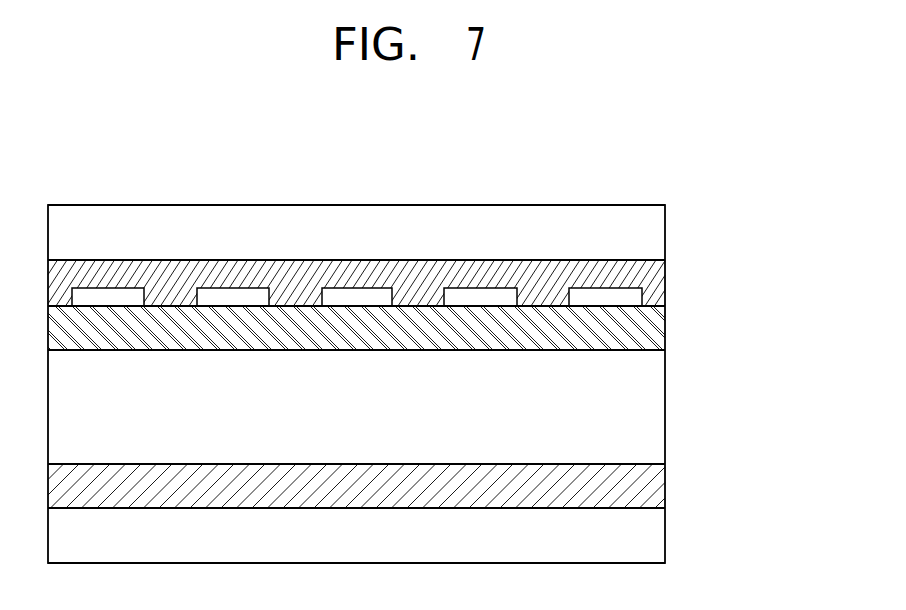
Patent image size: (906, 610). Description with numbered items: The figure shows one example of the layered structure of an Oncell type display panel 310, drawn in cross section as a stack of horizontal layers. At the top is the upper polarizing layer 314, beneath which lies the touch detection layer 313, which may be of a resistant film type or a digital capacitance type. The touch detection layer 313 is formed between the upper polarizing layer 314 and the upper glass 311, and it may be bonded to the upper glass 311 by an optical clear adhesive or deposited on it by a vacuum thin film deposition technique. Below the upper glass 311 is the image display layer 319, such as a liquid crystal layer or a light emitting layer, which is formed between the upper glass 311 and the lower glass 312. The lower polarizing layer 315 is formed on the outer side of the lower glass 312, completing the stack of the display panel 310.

The display panel 310 is at (678, 185).
The upper polarizing layer 314 is at (657, 237).
The touch detection layer 313 is at (657, 283).
The upper glass 311 is at (657, 330).
The liquid crystal layer / cell gap 319 is at (657, 402).
The lower glass 312 is at (657, 485).
The lower polarizing layer 315 is at (657, 533).